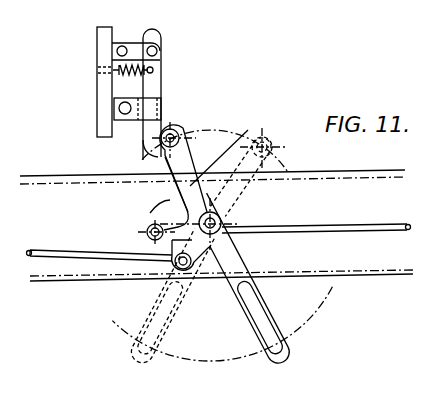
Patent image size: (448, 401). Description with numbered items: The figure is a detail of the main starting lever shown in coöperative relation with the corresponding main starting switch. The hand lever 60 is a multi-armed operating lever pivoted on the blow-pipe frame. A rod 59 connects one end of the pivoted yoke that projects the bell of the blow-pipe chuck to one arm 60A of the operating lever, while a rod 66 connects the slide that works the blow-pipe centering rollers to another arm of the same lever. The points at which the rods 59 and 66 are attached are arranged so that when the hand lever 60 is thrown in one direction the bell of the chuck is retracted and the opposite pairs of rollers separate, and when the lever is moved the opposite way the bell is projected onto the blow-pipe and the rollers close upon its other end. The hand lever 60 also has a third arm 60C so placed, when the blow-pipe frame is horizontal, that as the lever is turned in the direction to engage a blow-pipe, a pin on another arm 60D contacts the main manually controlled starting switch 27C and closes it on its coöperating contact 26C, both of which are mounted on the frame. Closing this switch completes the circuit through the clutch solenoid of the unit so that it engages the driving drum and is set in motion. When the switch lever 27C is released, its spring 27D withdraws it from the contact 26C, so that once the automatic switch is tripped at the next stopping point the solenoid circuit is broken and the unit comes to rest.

The main manually controlled starting switch 27C is at (152, 85).
The coöperating contact 26C is at (143, 113).
The spring 27D is at (127, 74).
The hand lever 60 is at (273, 325).
The arm of the operating lever 60A is at (165, 231).
The third arm of the hand lever 60C is at (175, 133).
The arm of the hand lever 60D is at (262, 142).
The rod 59 is at (388, 230).
The rod 66 is at (62, 257).